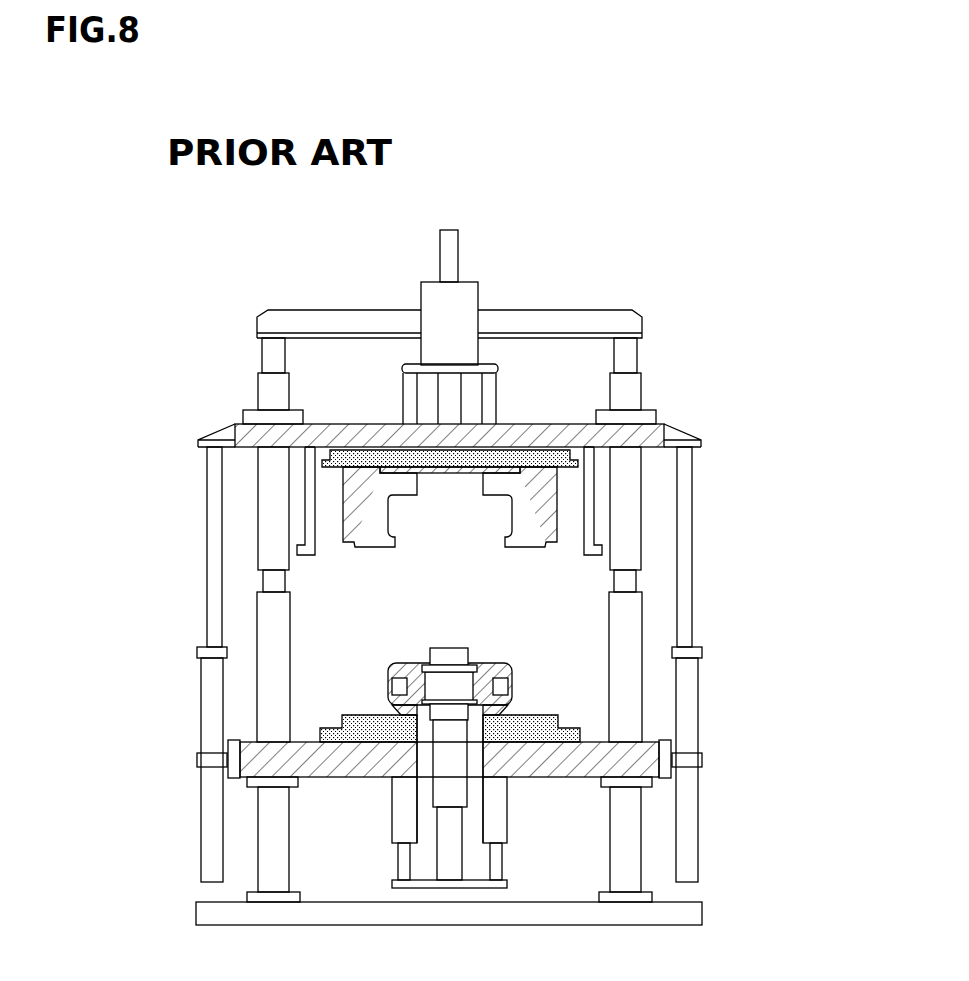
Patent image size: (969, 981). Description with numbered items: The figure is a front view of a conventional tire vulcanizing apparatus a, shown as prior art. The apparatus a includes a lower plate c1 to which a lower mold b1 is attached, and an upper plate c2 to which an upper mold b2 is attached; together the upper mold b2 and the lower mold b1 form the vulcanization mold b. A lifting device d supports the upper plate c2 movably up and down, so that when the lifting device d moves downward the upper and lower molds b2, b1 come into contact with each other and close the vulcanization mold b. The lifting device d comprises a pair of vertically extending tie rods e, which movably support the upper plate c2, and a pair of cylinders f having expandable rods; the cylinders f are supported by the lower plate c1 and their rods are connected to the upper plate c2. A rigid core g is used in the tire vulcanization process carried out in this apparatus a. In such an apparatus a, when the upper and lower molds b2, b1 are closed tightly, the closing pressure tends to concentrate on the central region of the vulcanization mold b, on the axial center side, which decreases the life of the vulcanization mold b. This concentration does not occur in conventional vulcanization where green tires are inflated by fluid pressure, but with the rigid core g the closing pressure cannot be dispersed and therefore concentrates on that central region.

The tire vulcanizing apparatus a is at (626, 272).
The vulcanization mold b is at (586, 596).
The lower mold b1 is at (577, 716).
The upper mold b2 is at (562, 509).
The lower plate c1 is at (563, 762).
The upper plate c2 is at (553, 423).
The lifting device d is at (187, 735).
The tie rods e is at (257, 840).
The cylinders f is at (200, 687).
The rigid core g is at (494, 668).